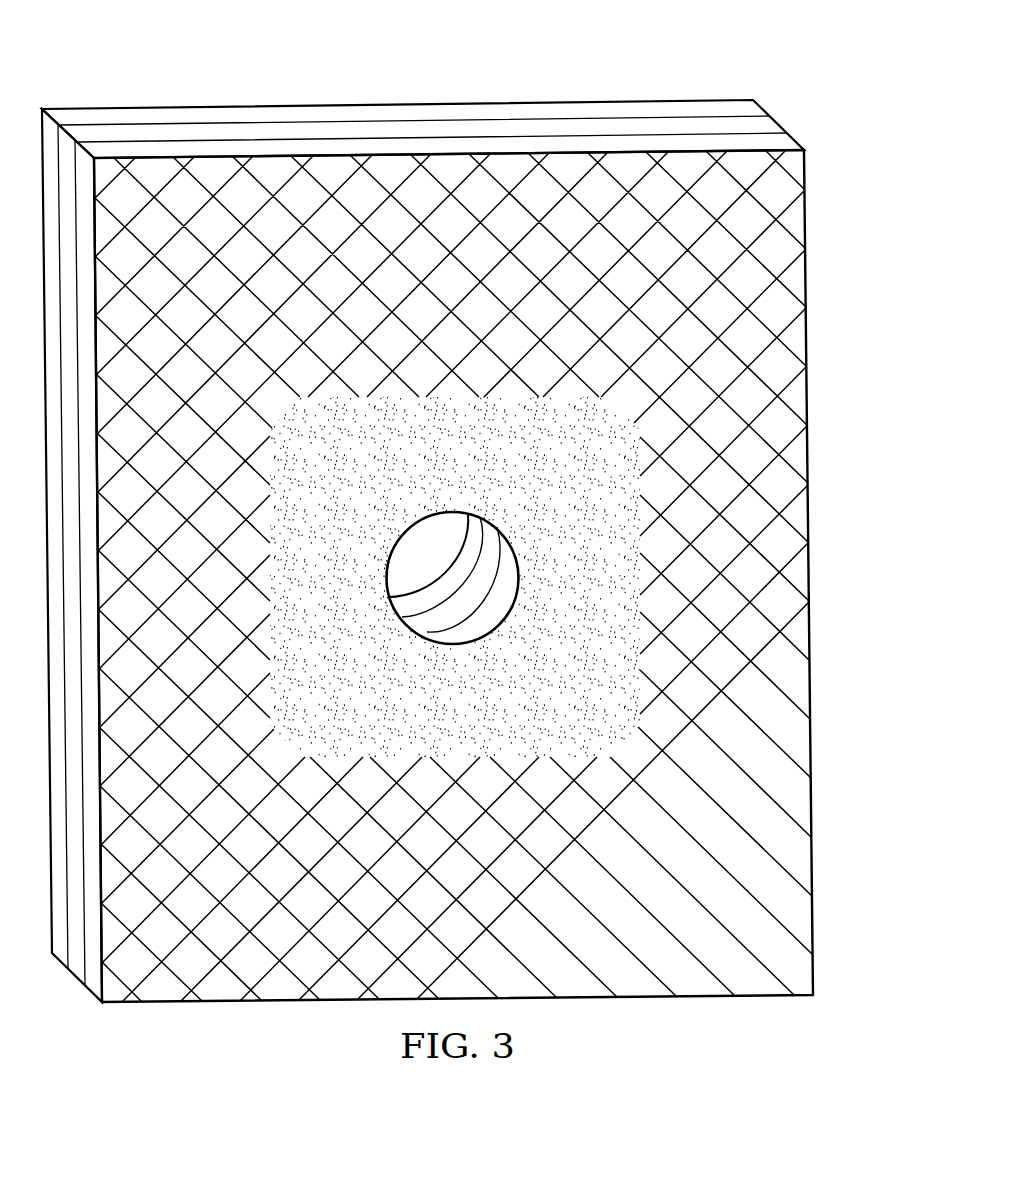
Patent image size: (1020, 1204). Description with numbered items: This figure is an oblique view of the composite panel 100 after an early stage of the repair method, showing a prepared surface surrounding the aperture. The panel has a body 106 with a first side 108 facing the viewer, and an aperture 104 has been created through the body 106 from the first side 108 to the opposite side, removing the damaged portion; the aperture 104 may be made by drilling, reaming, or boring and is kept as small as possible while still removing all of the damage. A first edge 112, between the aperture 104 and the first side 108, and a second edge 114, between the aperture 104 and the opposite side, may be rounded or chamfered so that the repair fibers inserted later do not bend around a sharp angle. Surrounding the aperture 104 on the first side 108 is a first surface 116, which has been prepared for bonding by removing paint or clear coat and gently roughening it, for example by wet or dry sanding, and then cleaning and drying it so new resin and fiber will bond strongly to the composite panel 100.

The composite panel 100 is at (462, 506).
The aperture 104 is at (455, 604).
The body 106 is at (593, 83).
The first side 108 is at (800, 576).
The first edge 112 is at (519, 578).
The second edge 114 is at (403, 592).
The first surface 116 is at (482, 390).